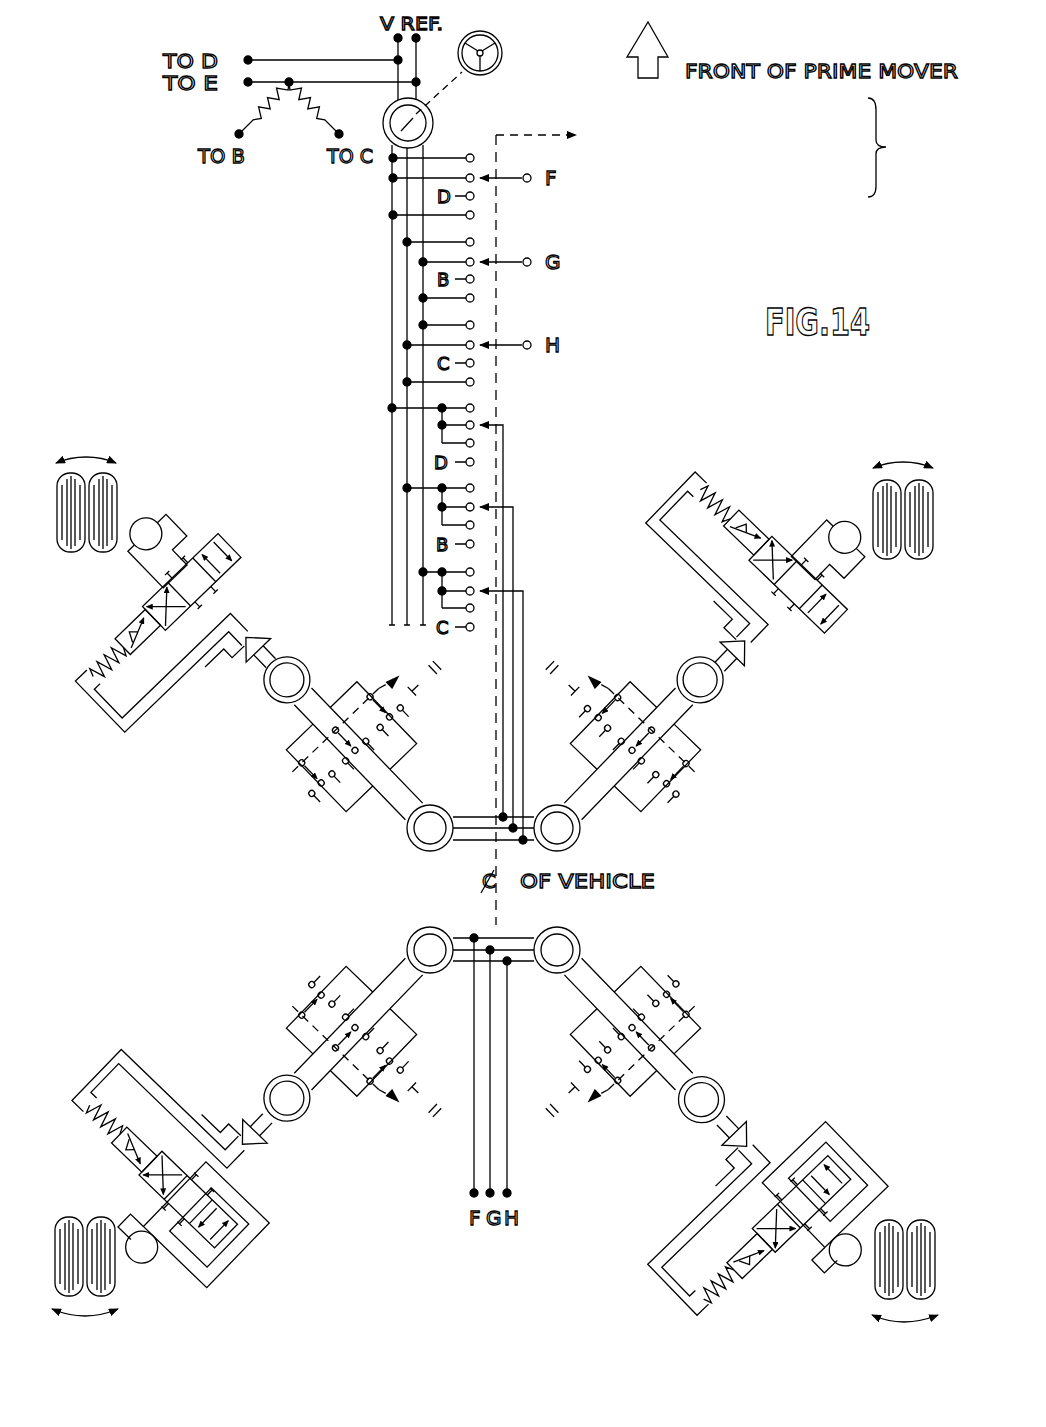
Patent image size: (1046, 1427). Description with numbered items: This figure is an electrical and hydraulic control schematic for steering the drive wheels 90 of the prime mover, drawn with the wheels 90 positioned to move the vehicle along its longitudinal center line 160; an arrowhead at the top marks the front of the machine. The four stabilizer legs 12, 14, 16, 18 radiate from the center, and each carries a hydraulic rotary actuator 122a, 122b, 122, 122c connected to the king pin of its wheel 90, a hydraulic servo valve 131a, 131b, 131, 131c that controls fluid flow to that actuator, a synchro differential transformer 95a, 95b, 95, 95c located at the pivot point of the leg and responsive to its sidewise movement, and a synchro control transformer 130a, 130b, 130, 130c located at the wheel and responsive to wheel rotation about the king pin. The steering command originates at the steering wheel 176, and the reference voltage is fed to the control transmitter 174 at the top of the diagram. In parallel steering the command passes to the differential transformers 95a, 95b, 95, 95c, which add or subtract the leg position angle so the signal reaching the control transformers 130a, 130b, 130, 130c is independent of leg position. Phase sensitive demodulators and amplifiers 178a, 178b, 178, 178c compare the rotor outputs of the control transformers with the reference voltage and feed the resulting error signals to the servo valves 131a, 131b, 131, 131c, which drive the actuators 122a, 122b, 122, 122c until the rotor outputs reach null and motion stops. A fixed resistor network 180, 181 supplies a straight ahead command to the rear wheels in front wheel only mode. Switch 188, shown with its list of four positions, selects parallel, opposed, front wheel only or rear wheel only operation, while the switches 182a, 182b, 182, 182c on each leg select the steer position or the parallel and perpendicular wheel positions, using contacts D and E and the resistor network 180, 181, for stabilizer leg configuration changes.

The stabilizer leg 12 is at (780, 713).
The stabilizer leg 14 is at (233, 724).
The stabilizer leg 16 is at (280, 1182).
The stabilizer leg 18 is at (768, 1080).
The wheels 90 is at (70, 525).
The synchro differential transformer 95 is at (409, 931).
The synchro differential transformer 95a is at (578, 840).
The synchro differential transformer 95b is at (413, 847).
The synchro differential transformer 95c is at (580, 938).
The hydraulic rotary actuator 122 is at (141, 1262).
The hydraulic rotary actuator 122a is at (847, 520).
The hydraulic rotary actuator 122b is at (149, 513).
The hydraulic rotary actuator 122c is at (837, 1268).
The synchro control transformer 130 is at (267, 1083).
The synchro control transformer 130a is at (717, 703).
The synchro control transformer 130b is at (303, 660).
The synchro control transformer 130c is at (717, 1077).
The hydraulic servo valve 131 is at (138, 1188).
The hydraulic servo valve 131a is at (840, 625).
The hydraulic servo valve 131b is at (225, 540).
The hydraulic servo valve 131c is at (787, 1252).
The center line 160 is at (497, 908).
The control transmitter 174 is at (432, 113).
The steering wheel 176 is at (502, 50).
The phase sensitive demodulator and amplifier 178 is at (262, 1143).
The phase sensitive demodulator and amplifier 178a is at (747, 660).
The phase sensitive demodulator and amplifier 178b is at (262, 633).
The phase sensitive demodulator and amplifier 178c is at (750, 1132).
The fixed resistor network 180 is at (254, 124).
The fixed resistor network 181 is at (312, 124).
The switch 182 is at (298, 1028).
The switch 182a is at (693, 760).
The switch 182b is at (293, 755).
The switch 182c is at (692, 1028).
The switch 188 is at (764, 147).